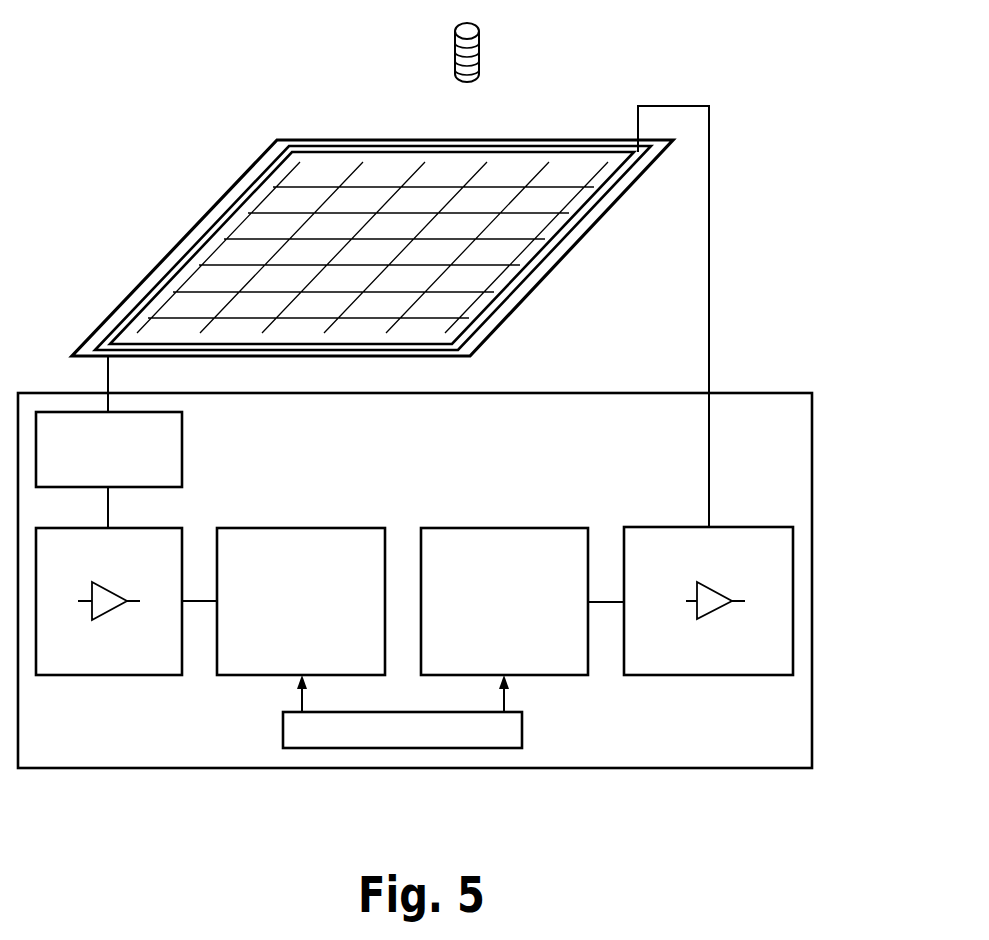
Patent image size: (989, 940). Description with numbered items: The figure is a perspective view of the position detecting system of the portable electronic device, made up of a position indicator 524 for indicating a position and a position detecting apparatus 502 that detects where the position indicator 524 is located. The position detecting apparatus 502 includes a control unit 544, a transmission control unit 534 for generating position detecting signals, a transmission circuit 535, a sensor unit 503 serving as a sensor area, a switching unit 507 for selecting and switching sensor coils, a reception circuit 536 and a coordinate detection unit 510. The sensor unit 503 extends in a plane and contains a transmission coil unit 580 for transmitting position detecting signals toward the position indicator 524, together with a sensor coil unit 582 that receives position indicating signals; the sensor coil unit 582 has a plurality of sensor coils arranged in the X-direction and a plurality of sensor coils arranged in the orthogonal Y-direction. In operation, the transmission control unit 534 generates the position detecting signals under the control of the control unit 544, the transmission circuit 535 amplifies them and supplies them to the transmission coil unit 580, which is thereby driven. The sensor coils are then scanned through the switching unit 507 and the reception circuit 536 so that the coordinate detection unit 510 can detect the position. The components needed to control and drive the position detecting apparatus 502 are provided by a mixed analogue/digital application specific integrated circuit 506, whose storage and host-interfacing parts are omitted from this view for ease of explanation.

The position detecting apparatus 502 is at (225, 172).
The sensor unit 503 is at (309, 140).
The transmission coil unit 580 is at (112, 313).
The sensor coil unit 582 is at (228, 250).
The position indicator 524 is at (455, 42).
The mixed analogue/digital application specific integrated circuit 506 is at (812, 422).
The switching unit 507 is at (183, 425).
The reception circuit 536 is at (117, 677).
The coordinate detection unit 510 is at (325, 527).
The transmission control unit 534 is at (530, 527).
The transmission circuit 535 is at (753, 527).
The control unit 544 is at (522, 735).